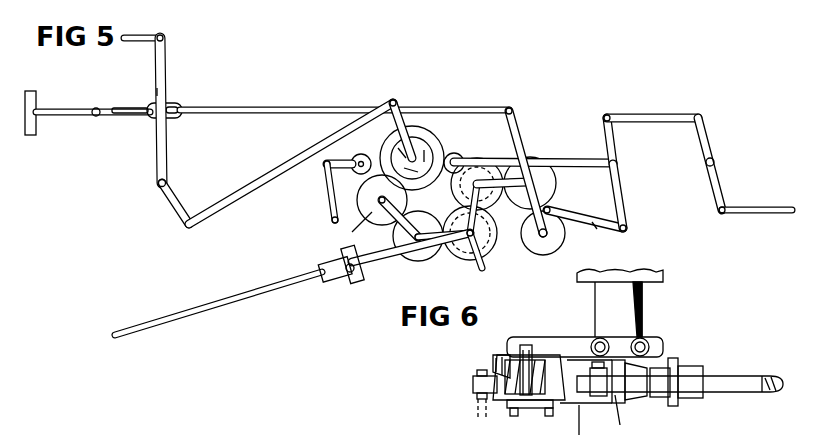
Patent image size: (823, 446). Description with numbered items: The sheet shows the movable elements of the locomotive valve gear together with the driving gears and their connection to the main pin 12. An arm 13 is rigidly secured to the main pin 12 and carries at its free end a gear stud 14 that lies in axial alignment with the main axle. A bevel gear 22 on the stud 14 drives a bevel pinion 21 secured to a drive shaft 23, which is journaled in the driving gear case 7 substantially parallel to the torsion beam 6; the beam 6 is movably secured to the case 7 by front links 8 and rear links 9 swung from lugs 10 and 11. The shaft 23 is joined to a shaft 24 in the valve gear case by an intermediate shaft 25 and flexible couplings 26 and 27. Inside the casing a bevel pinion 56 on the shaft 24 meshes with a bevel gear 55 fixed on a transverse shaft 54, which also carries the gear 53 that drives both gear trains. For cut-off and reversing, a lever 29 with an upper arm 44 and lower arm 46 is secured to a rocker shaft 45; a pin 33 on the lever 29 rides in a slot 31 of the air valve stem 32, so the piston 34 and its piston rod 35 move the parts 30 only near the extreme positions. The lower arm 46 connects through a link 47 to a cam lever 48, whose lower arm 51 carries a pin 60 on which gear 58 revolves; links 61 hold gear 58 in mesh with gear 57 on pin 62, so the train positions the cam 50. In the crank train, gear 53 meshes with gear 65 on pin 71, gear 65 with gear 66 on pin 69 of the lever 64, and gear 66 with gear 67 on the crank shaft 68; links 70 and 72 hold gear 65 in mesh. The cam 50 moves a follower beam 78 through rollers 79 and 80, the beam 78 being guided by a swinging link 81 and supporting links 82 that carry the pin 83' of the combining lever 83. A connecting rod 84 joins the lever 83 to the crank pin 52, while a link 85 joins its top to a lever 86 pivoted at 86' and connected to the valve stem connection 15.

In FIG. 6, the torsion beam 6 is at (728, 378).
In FIG. 6, the driving gear case 7 is at (578, 425).
In FIG. 6, the front links 8 is at (606, 392).
In FIG. 6, the rear links 9 is at (473, 380).
In FIG. 6, the lug 10 is at (624, 420).
In FIG. 6, the lug 11 is at (487, 417).
In FIG. 6, the main pin 12 is at (630, 308).
In FIG. 6, the arm 13 is at (553, 337).
In FIG. 6, the gear stud 14 is at (521, 350).
In FIG. 5, the valve stem connection 15 is at (754, 213).
In FIG. 6, the bevel pinion 21 is at (560, 402).
In FIG. 6, the bevel gear 22 is at (493, 364).
In FIG. 6, the drive shaft 23 is at (647, 396).
In FIG. 5, the shaft 24 is at (388, 263).
In FIG. 5, the intermediate shaft 25 is at (255, 298).
In FIG. 6, the intermediate shaft 25 is at (771, 378).
In FIG. 5, the flexible coupling 26 is at (353, 282).
In FIG. 6, the flexible coupling 27 is at (673, 364).
In FIG. 5, the lever 29 is at (157, 92).
In FIG. 5, the parts operated by the air piston 30 is at (250, 107).
In FIG. 5, the slot 31 is at (168, 118).
In FIG. 5, the air valve stem 32 is at (143, 114).
In FIG. 5, the pin 33 is at (165, 106).
In FIG. 5, the piston 34 is at (36, 97).
In FIG. 5, the piston rod 35 is at (75, 110).
In FIG. 5, the upper arm 44 is at (164, 66).
In FIG. 5, the rocker shaft 45 is at (157, 186).
In FIG. 5, the lower arm 46 is at (172, 212).
In FIG. 5, the link 47 is at (268, 184).
In FIG. 5, the cam lever 48 is at (404, 87).
In FIG. 5, the cam 50 is at (440, 146).
In FIG. 5, the lower arm 51 is at (388, 194).
In FIG. 5, the crank pin 52 is at (552, 212).
In FIG. 5, the gear 53 is at (473, 270).
In FIG. 5, the transverse shaft 54 is at (484, 252).
In FIG. 5, the bevel gear 55 is at (497, 247).
In FIG. 5, the bevel pinion 56 is at (443, 258).
In FIG. 5, the gear 57 is at (423, 262).
In FIG. 5, the gear 58 is at (348, 221).
In FIG. 5, the pin 60 is at (362, 189).
In FIG. 5, the links 61 is at (352, 229).
In FIG. 5, the pin 62 is at (412, 237).
In FIG. 5, the lever 64 is at (519, 128).
In FIG. 5, the gear 65 is at (494, 198).
In FIG. 5, the gear 66 is at (528, 176).
In FIG. 5, the gear 67 is at (563, 238).
In FIG. 5, the crank shaft 68 is at (543, 246).
In FIG. 5, the pin 69 is at (536, 176).
In FIG. 5, the links 70 is at (474, 184).
In FIG. 5, the pin 71 is at (466, 207).
In FIG. 5, the links 72 is at (447, 220).
In FIG. 5, the follower beam 78 is at (326, 168).
In FIG. 5, the cam follower roller 79 is at (470, 153).
In FIG. 5, the cam follower roller 80 is at (357, 157).
In FIG. 5, the swinging link 81 is at (331, 205).
In FIG. 5, the swinging links 82 is at (619, 188).
In FIG. 5, the combining lever 83 is at (631, 141).
In FIG. 5, the pin 83' is at (635, 164).
In FIG. 5, the connecting rod 84 is at (601, 235).
In FIG. 5, the link 85 is at (655, 117).
In FIG. 5, the lever 86 is at (726, 164).
In FIG. 5, the pivot 86' is at (732, 151).